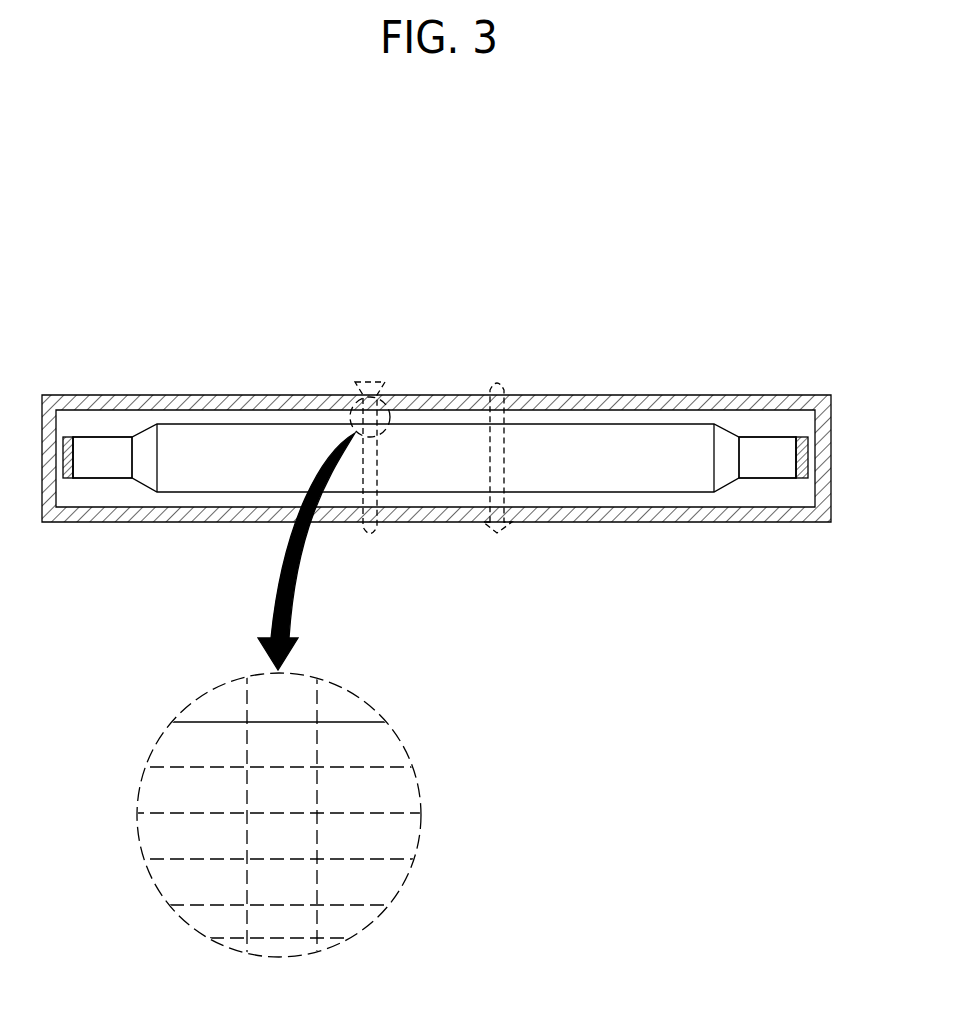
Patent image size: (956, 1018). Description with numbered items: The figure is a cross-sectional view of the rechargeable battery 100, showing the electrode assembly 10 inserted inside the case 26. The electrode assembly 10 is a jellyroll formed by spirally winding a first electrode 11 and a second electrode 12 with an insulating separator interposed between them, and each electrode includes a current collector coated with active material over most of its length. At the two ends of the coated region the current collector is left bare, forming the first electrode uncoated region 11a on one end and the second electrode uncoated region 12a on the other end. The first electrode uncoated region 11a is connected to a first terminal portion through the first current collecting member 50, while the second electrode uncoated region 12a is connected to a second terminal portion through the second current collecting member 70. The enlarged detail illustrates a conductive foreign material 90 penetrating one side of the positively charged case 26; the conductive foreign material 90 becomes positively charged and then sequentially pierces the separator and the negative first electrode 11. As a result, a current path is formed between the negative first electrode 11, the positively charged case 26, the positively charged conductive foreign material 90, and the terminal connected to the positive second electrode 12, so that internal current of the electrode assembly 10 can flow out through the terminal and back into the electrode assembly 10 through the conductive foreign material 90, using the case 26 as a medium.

The rechargeable battery 100 is at (457, 231).
The electrode assembly 10 is at (591, 447).
The first electrode uncoated region 11a is at (105, 452).
The second electrode uncoated region 12a is at (770, 452).
The case 26 is at (616, 522).
The first current collecting member 50 is at (67, 478).
The second current collecting member 70 is at (803, 478).
The conductive foreign material 90 is at (368, 382).
The first electrode 11 is at (393, 795).
The second electrode 12 is at (378, 888).